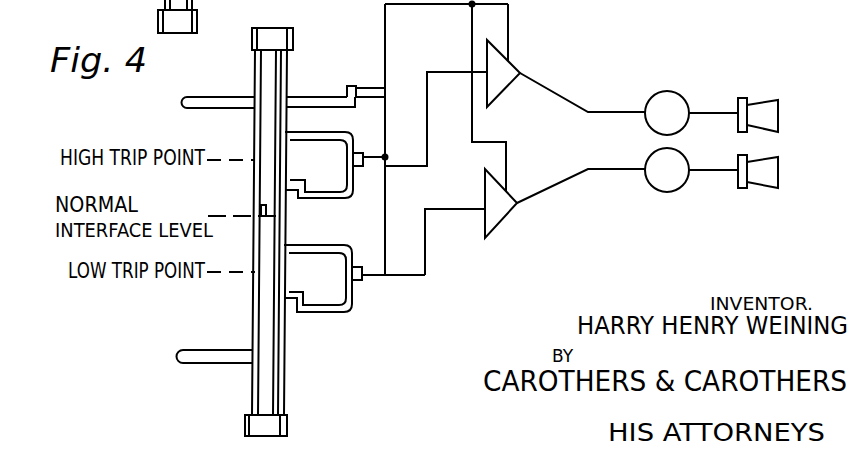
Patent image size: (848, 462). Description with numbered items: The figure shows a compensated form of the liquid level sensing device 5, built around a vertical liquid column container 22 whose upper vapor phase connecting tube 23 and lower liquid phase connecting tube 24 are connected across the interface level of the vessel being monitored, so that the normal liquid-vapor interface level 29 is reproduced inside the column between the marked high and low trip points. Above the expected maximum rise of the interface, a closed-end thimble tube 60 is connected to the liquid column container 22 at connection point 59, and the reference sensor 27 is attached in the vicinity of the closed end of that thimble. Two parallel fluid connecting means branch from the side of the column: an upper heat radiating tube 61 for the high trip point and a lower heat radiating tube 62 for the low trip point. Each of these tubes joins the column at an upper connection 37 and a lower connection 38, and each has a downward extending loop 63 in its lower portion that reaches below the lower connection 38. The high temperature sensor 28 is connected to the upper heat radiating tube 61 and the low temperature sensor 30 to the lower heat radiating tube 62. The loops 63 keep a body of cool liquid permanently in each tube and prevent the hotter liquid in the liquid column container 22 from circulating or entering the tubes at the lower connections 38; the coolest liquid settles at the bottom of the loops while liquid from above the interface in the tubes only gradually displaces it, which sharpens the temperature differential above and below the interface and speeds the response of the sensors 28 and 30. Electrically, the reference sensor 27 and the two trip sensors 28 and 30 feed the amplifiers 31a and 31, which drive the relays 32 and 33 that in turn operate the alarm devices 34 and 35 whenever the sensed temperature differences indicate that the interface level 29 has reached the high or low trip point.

The liquid level sensing device 5 is at (261, 218).
The liquid column container 22 is at (262, 127).
The upper vapor phase connecting tube 23 is at (237, 72).
The lower liquid phase connecting tube 24 is at (232, 321).
The reference sensor 27 is at (351, 86).
The high temperature sensor 28 is at (335, 170).
The interface level 29 is at (262, 210).
The low temperature sensor 30 is at (285, 254).
The amplifier 31 is at (508, 213).
The amplifier 31a is at (510, 63).
The relay 32 is at (673, 92).
The relay 33 is at (658, 190).
The alarm device 34 is at (773, 100).
The alarm device 35 is at (758, 188).
The upper connection 37 is at (286, 141).
The lower connection 38 is at (288, 178).
The thimble tube connection point 59 is at (289, 96).
The thimble tube 60 is at (334, 84).
The upper heat radiating tube 61 is at (353, 178).
The lower heat radiating tube 62 is at (352, 290).
The downward extending loop 63 is at (347, 198).